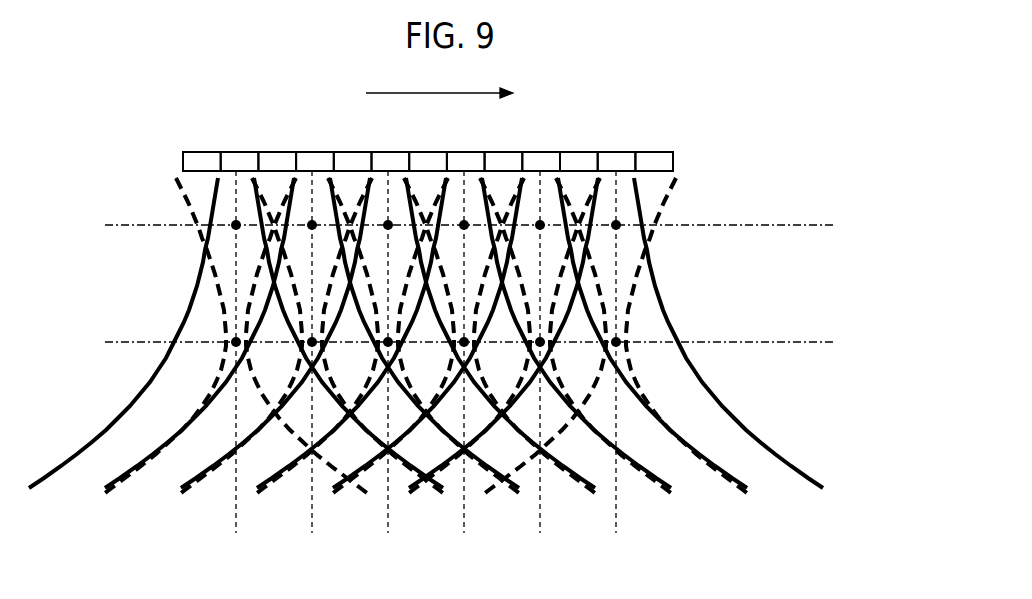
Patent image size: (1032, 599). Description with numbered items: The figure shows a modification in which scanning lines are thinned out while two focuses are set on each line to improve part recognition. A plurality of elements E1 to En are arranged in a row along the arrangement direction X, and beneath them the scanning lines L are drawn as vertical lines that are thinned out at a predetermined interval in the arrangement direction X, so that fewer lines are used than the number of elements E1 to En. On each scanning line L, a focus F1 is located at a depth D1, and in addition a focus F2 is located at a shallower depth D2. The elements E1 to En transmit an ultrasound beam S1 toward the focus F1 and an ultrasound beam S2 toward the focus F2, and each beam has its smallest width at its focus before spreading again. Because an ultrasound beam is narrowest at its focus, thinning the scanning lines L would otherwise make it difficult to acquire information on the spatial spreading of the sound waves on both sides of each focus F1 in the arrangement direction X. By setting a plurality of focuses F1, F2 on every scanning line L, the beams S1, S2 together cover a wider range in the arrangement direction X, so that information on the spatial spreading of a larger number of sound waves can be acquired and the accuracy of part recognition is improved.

The first element E1 is at (202, 144).
The n-th element En is at (654, 144).
The arrangement direction X is at (450, 95).
The depth of focus F1 D1 is at (453, 343).
The depth of focus F2 D2 is at (453, 228).
The focus F1 is at (618, 344).
The focus F2 is at (620, 228).
The ultrasound beam S1 is at (738, 495).
The ultrasound beam S2 is at (813, 480).
The scanning line L is at (614, 523).